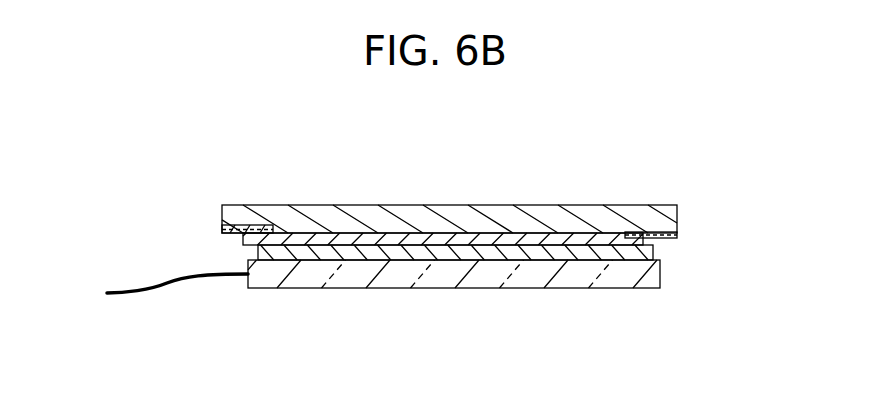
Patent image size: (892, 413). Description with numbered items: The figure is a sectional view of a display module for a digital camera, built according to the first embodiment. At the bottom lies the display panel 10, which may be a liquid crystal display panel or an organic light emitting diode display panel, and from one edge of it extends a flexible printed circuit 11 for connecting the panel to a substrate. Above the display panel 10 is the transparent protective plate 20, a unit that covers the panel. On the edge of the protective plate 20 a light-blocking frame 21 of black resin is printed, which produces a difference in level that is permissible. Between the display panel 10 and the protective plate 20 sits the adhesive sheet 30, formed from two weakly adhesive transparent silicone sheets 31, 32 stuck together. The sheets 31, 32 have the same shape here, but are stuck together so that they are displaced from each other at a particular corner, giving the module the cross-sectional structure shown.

The display panel 10 is at (621, 281).
The flexible printed circuit 11 is at (167, 282).
The transparent protective plate 20 is at (624, 212).
The light-blocking frame 21 is at (241, 230).
The adhesive sheet 30 is at (514, 255).
The silicone sheet 31 is at (497, 269).
The silicone sheet 32 is at (630, 236).